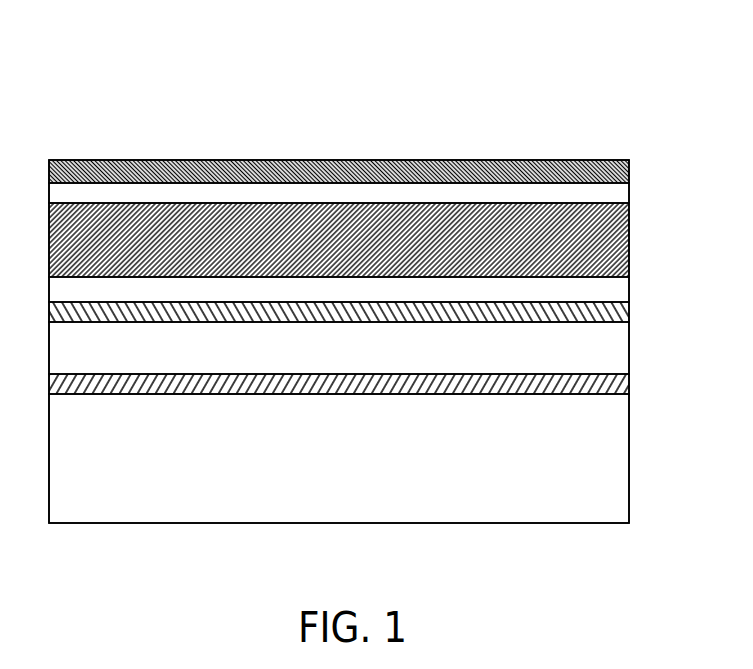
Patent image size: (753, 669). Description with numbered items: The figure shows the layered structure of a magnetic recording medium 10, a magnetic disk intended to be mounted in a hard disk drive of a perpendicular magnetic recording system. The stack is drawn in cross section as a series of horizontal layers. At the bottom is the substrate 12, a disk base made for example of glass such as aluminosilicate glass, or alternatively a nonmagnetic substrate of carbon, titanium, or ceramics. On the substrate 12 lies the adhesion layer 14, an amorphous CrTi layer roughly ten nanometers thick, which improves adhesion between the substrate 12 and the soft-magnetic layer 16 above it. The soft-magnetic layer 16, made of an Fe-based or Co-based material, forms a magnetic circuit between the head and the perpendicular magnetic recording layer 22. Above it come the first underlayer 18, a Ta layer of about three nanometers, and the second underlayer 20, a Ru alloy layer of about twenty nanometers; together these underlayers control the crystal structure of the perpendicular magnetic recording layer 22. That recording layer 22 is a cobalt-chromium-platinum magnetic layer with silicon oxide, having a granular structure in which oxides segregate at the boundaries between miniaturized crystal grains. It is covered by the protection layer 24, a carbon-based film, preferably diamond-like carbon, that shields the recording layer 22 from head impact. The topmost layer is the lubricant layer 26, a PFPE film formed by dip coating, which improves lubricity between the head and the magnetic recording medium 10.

The magnetic recording medium 10 is at (647, 60).
The substrate 12 is at (620, 481).
The adhesion layer 14 is at (620, 390).
The soft-magnetic layer 16 is at (620, 365).
The first underlayer 18 is at (629, 312).
The second underlayer 20 is at (620, 290).
The perpendicular magnetic recording layer 22 is at (629, 247).
The protection layer 24 is at (620, 200).
The lubricant layer 26 is at (629, 173).